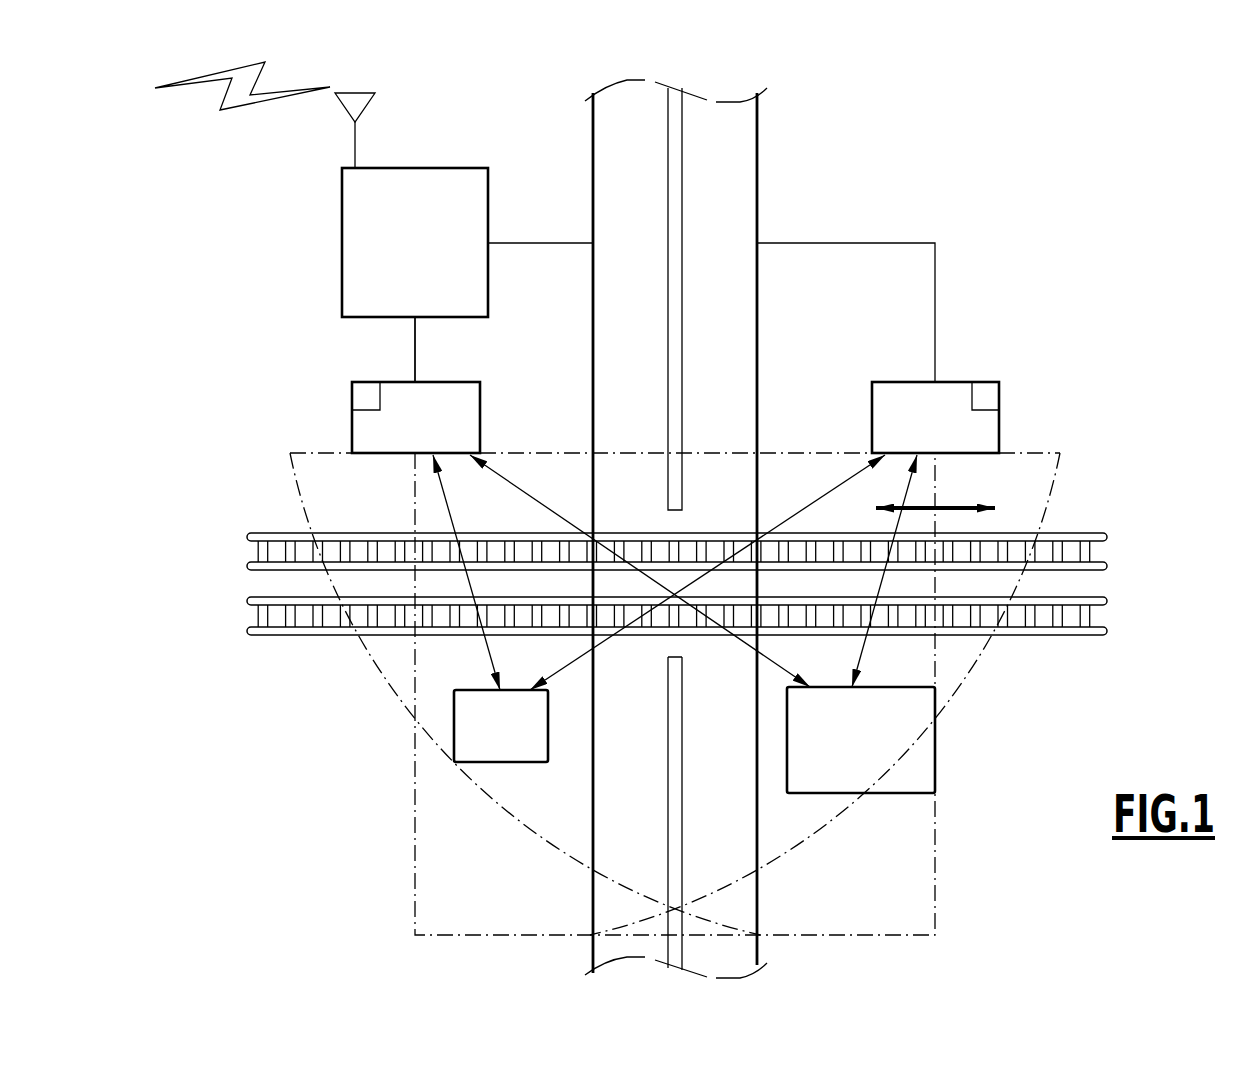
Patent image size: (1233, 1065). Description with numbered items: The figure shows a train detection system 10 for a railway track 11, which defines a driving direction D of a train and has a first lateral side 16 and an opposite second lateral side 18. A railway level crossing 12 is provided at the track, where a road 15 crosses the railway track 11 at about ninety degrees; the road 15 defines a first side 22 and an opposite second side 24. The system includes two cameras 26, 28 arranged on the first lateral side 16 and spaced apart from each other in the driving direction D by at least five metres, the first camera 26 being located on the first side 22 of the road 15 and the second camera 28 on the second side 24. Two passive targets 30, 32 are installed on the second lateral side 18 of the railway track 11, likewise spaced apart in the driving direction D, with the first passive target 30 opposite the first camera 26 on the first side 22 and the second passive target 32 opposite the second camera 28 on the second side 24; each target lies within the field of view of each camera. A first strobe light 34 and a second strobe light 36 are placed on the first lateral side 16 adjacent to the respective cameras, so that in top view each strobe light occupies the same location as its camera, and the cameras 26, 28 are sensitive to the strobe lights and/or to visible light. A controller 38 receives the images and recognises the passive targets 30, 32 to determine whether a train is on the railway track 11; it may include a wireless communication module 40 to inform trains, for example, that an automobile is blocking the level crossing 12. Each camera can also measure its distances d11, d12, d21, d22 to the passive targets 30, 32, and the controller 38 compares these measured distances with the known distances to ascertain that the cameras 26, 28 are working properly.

The train detection system 10 is at (958, 182).
The railway track 11 is at (272, 630).
The railway level crossing 12 is at (393, 825).
The road 15 is at (723, 176).
The first lateral side 16 is at (287, 347).
The second lateral side 18 is at (292, 767).
The first side of the road 22 is at (395, 853).
The second side of the road 24 is at (972, 848).
The first camera 26 is at (458, 423).
The second camera 28 is at (978, 432).
The first passive target 30 is at (512, 740).
The second passive target 32 is at (873, 755).
The first strobe light 34 is at (360, 393).
The second strobe light 36 is at (987, 395).
The controller 38 is at (360, 240).
The wireless communication module 40 is at (343, 103).
The distance from first camera to first passive target d11 is at (457, 523).
The distance from first camera to second passive target d12 is at (513, 485).
The distance from second camera to first passive target d21 is at (778, 522).
The distance from second camera to second passive target d22 is at (860, 647).
The driving direction D is at (943, 500).